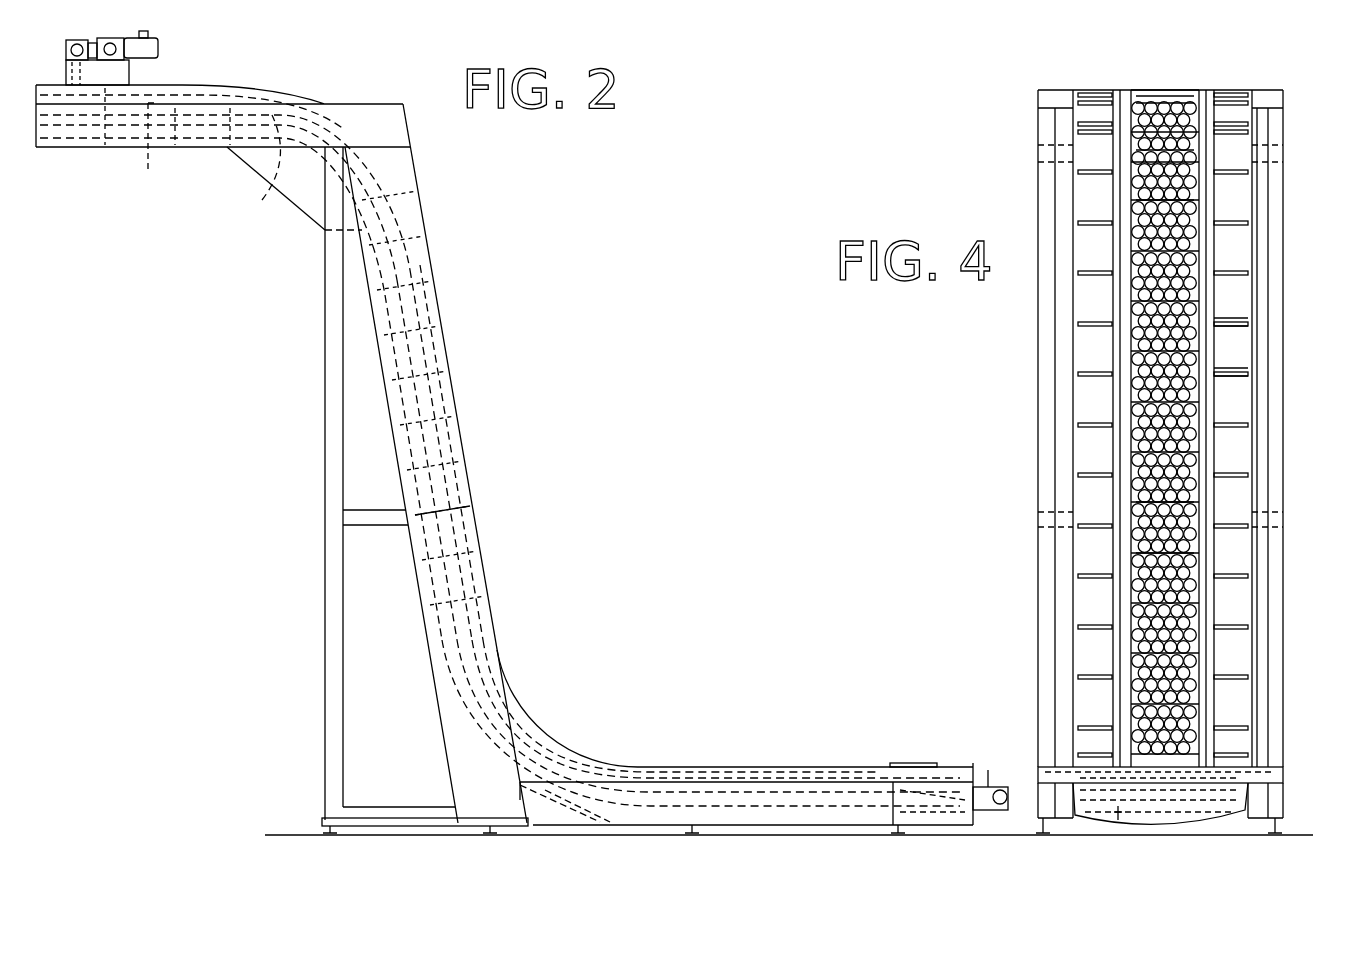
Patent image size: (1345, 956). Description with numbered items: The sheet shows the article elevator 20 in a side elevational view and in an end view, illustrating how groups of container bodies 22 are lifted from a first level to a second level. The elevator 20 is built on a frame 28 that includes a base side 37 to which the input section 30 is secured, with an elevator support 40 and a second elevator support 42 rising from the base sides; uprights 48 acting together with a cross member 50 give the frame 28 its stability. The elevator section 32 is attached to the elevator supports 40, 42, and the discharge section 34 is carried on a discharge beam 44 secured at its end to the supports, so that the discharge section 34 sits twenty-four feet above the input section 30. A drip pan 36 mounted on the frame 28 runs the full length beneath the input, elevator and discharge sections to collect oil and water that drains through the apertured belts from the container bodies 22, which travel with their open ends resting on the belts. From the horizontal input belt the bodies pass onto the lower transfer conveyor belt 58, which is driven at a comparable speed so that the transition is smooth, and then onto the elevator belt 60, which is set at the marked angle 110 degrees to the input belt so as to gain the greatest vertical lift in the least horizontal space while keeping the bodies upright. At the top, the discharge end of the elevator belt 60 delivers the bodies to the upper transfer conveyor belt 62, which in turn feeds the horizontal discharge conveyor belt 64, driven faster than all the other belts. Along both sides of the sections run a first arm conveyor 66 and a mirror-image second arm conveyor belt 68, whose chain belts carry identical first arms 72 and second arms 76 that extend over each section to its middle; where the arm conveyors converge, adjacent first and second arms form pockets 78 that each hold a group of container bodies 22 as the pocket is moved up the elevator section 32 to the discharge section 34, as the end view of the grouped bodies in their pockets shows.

In FIG. 2, the article elevator 20 is at (446, 310).
In FIG. 4, the container bodies 22 is at (1200, 622).
In FIG. 2, the frame 28 is at (316, 447).
In FIG. 2, the input section 30 is at (838, 765).
In FIG. 4, the input section 30 is at (1250, 765).
In FIG. 2, the elevator section 32 is at (463, 446).
In FIG. 4, the elevator section 32 is at (1045, 408).
In FIG. 2, the discharge section 34 is at (208, 83).
In FIG. 4, the discharge section 34 is at (1107, 112).
In FIG. 4, the drip pan 36 is at (1160, 830).
In FIG. 2, the base side 37 is at (830, 800).
In FIG. 2, the elevator support 40 is at (437, 680).
In FIG. 4, the elevator support 40 is at (1043, 327).
In FIG. 4, the elevator support 42 is at (1276, 254).
In FIG. 2, the discharge beam 44 is at (107, 127).
In FIG. 2, the uprights 48 is at (323, 622).
In FIG. 2, the cross member 50 is at (425, 810).
In FIG. 2, the lower transfer conveyor belt 58 is at (578, 775).
In FIG. 2, the elevator belt 60 is at (478, 536).
In FIG. 2, the upper transfer conveyor belt 62 is at (253, 170).
In FIG. 2, the discharge conveyor belt 64 is at (151, 149).
In FIG. 4, the first arm conveyor 66 is at (1110, 474).
In FIG. 4, the second arm conveyor belt 68 is at (1200, 455).
In FIG. 4, the first arms 72 is at (1100, 622).
In FIG. 4, the second arms 76 is at (1236, 370).
In FIG. 4, the pockets 78 is at (1190, 510).
In FIG. 2, the angle 110 is at (473, 505).